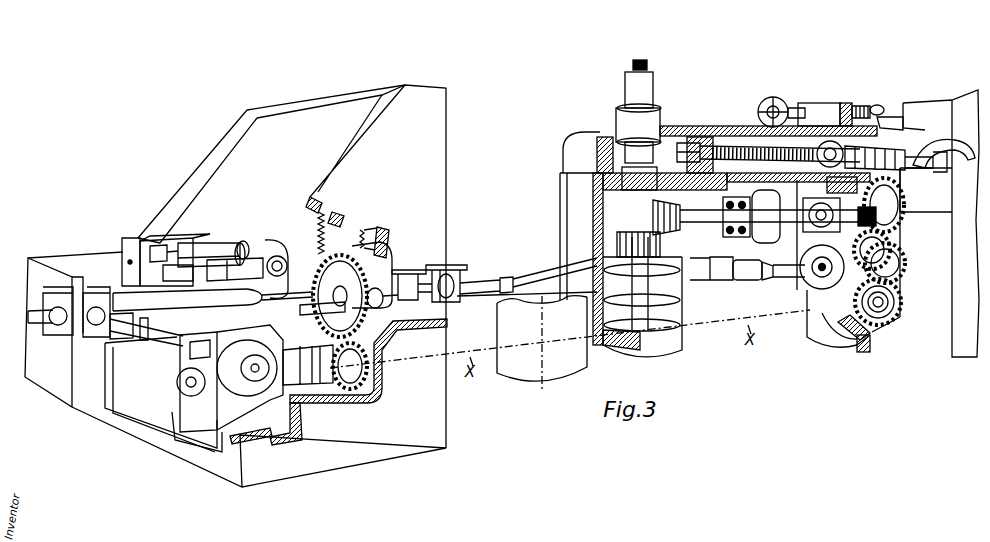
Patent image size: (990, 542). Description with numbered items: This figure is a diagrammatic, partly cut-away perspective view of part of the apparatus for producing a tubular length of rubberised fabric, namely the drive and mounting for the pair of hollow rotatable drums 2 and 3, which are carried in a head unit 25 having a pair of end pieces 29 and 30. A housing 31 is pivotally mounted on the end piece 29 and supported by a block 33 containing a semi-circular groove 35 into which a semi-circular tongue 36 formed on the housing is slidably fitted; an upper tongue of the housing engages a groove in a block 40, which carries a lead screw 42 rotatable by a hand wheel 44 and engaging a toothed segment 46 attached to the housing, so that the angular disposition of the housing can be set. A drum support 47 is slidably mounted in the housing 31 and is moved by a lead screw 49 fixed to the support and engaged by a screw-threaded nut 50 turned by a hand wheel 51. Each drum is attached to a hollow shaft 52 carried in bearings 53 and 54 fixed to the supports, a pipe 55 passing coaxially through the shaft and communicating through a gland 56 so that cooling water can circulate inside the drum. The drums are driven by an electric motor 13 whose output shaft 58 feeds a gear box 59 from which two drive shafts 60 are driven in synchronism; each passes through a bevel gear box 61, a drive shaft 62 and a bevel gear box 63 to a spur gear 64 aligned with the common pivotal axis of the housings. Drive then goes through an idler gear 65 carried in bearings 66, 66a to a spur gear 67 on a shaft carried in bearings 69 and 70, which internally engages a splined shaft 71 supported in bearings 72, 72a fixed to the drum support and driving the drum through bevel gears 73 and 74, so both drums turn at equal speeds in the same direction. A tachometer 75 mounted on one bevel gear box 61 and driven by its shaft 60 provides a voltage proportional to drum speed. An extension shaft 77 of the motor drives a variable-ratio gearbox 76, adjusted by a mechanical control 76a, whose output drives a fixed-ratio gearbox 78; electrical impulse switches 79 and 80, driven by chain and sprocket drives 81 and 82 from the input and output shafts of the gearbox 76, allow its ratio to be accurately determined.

The hollow rotatable drum 2 is at (580, 374).
The hollow rotatable drum 3 is at (676, 340).
The electric motor 13 is at (304, 250).
The head unit 25 is at (210, 150).
The end piece 29 is at (956, 101).
The end piece 30 is at (318, 98).
The housing 31 is at (770, 122).
The block 33 is at (848, 345).
The semi-circular groove 35 is at (872, 349).
The semi-circular tongue 36 is at (874, 332).
The block 40 is at (820, 103).
The lead screw 42 is at (862, 106).
The hand wheel 44 is at (776, 97).
The toothed segment 46 is at (880, 106).
The drum support 47 is at (560, 189).
The lead screw 49 is at (825, 150).
The screw-threaded nut 50 is at (880, 148).
The hand wheel 51 is at (956, 135).
The shaft 52 is at (598, 166).
The bearing 53 is at (604, 138).
The bearing 54 is at (594, 258).
The pipe 55 is at (680, 322).
The gland 56 is at (650, 86).
The output shaft 58 is at (380, 270).
The gear box 59 is at (442, 303).
The drive shaft 60 is at (505, 280).
The bevel gear box 61 is at (100, 343).
The drive shaft 62 is at (156, 329).
The bevel gear box 63 is at (225, 430).
The spur gear 64 is at (383, 351).
The idler gear 65 is at (378, 308).
The bearing 66 is at (892, 243).
The bearing 66a is at (810, 262).
The spur gear 67 is at (385, 246).
The bearing 69 is at (820, 203).
The bearing 70 is at (881, 202).
The splined shaft 71 is at (790, 209).
The bearing 72 is at (736, 237).
The bearing 72a is at (652, 175).
The bevel gear 73 is at (650, 200).
The bevel gear 74 is at (660, 228).
The tachometer 75 is at (33, 328).
The variable-ratio gearbox 76 is at (208, 245).
The mechanical control 76a is at (270, 250).
The extension shaft 77 is at (260, 256).
The fixed-ratio gearbox 78 is at (137, 238).
The electrical impulse switch 79 is at (187, 301).
The electrical impulse switch 80 is at (240, 243).
The chain and sprocket drive 81 is at (300, 302).
The chain and sprocket drive 82 is at (207, 246).